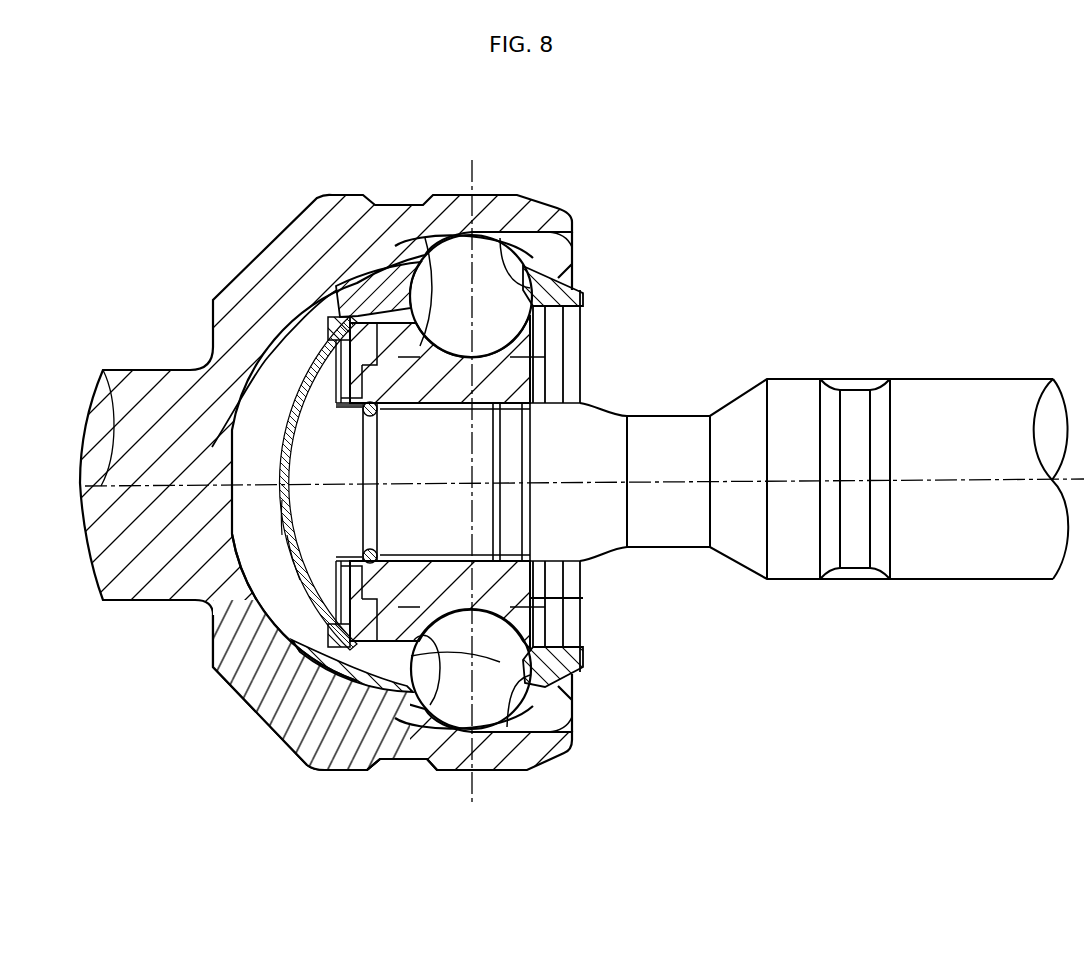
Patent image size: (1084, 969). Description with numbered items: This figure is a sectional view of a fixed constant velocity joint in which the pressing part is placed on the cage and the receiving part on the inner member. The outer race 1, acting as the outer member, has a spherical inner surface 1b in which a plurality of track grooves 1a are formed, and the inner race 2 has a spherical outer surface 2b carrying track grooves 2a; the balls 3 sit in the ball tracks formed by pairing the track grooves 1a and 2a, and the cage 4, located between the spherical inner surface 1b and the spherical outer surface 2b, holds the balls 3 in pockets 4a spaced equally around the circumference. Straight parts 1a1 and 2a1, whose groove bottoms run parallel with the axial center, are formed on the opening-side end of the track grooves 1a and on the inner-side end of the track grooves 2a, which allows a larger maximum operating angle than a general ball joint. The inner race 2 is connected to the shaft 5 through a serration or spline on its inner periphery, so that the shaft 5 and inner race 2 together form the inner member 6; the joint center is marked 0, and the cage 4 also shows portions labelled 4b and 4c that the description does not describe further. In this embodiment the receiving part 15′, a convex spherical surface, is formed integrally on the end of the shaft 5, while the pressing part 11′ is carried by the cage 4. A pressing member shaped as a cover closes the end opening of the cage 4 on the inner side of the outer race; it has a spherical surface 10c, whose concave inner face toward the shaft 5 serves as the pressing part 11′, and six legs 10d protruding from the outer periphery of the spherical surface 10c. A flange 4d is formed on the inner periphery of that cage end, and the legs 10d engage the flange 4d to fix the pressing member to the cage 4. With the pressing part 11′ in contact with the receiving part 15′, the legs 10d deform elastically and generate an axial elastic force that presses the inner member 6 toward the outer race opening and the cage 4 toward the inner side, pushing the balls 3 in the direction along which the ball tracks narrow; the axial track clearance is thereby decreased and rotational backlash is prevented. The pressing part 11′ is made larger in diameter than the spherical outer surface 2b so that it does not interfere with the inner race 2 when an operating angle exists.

The joint center 0 is at (473, 480).
The outer race 1 is at (262, 237).
The track grooves 1a is at (398, 710).
The spherical inner surface 1b is at (525, 285).
The straight part 1a1 is at (571, 244).
The inner race 2 is at (531, 366).
The track grooves 2a is at (535, 598).
The straight part 2a1 is at (432, 318).
The spherical outer surface 2b is at (378, 318).
The balls 3 is at (458, 252).
The cage 4 is at (381, 265).
The pockets 4a is at (513, 680).
The cage left spherical portion 4b is at (395, 695).
The cage window 4c is at (437, 690).
The flange 4d is at (298, 652).
The shaft 5 is at (935, 370).
The inner member 6 is at (213, 643).
The spherical surface 10c is at (330, 404).
The legs 10d is at (372, 292).
The pressing part 11′ is at (288, 430).
The receiving part 15′ is at (283, 517).